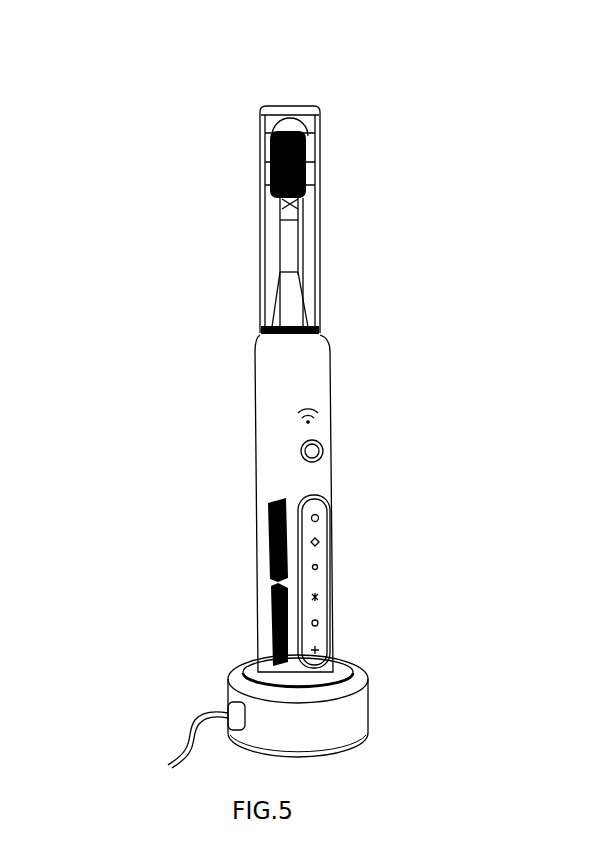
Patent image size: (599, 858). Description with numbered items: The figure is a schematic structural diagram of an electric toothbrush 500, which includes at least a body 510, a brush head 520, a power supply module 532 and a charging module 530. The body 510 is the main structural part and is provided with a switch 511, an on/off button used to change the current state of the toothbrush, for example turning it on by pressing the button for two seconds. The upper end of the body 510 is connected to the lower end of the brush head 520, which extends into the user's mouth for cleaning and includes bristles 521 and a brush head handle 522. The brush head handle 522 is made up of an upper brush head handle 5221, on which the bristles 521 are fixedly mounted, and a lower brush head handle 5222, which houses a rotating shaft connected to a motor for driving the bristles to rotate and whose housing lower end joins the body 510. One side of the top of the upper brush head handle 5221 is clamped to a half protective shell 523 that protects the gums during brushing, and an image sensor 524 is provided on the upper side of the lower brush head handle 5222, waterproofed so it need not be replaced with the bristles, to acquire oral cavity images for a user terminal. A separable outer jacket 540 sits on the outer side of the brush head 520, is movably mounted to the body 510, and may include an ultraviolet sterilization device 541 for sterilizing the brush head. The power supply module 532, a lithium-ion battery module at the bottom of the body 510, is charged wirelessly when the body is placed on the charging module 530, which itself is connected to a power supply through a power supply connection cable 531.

The electric toothbrush 500 is at (81, 45).
The body 510 is at (317, 377).
The switch 511 is at (323, 450).
The brush head 520 is at (351, 212).
The bristles 521 is at (318, 148).
The brush head handle 522 is at (365, 230).
The upper brush head handle 5221 is at (307, 170).
The lower brush head handle 5222 is at (299, 253).
The half protective shell 523 is at (311, 121).
The image sensor 524 is at (278, 205).
The charging module 530 is at (364, 707).
The power supply connection cable 531 is at (203, 717).
The power supply module 532 is at (277, 580).
The separable outer jacket 540 is at (262, 276).
The ultraviolet sterilization device 541 is at (268, 161).